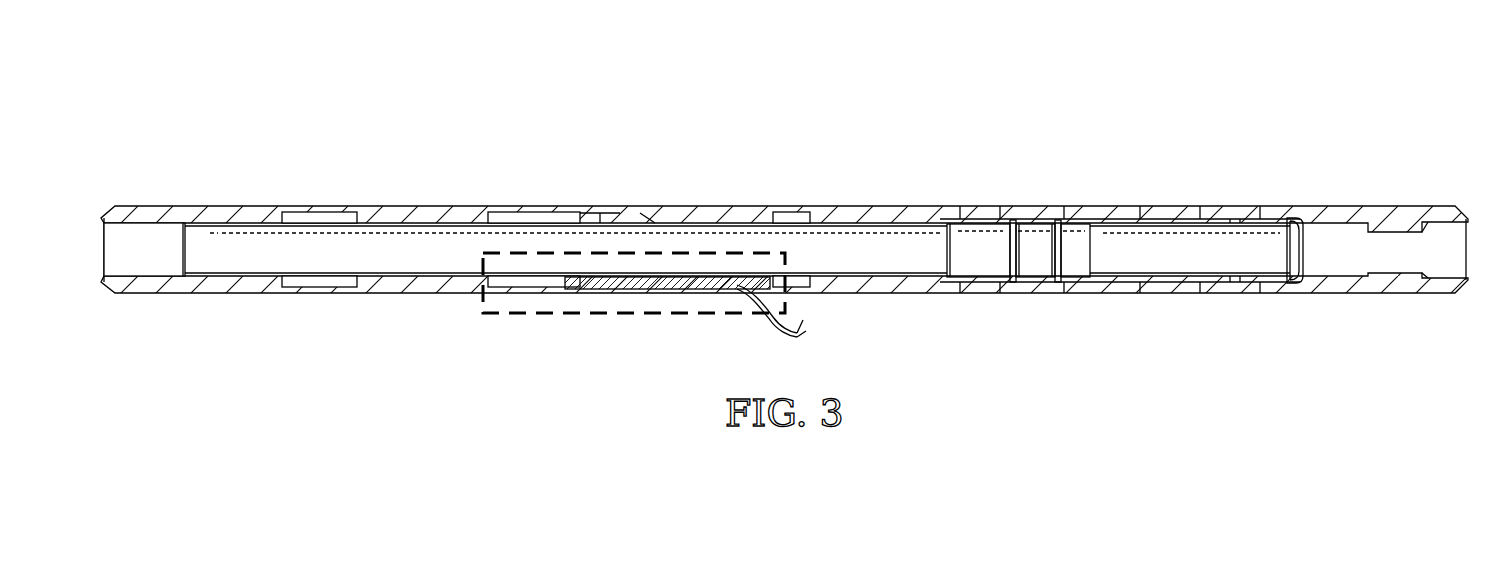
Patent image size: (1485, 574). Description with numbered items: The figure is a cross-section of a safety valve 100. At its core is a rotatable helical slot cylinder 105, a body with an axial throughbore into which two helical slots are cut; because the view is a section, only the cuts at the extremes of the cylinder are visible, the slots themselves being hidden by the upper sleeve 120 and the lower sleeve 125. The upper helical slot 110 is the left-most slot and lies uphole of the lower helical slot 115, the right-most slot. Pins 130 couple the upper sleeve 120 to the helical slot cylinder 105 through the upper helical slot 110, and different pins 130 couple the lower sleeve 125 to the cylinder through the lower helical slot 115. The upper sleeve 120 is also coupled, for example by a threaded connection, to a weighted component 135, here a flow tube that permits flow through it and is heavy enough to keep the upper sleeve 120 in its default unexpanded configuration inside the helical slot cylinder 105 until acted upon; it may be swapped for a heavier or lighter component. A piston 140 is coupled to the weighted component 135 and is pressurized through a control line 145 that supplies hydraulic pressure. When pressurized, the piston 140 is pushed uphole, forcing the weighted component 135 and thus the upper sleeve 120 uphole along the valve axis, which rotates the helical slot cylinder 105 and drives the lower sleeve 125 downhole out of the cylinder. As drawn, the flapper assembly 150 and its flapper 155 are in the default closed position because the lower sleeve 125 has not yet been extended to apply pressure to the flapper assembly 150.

The safety valve 100 is at (784, 221).
The helical slot cylinder 105 is at (784, 284).
The upper helical slot 110 is at (967, 207).
The lower helical slot 115 is at (1150, 207).
The upper sleeve 120 is at (992, 283).
The lower sleeve 125 is at (1090, 207).
The pins 130 is at (1005, 207).
The weighted component 135 is at (437, 283).
The piston 140 is at (627, 295).
The control line 145 is at (775, 322).
The flapper assembly 150 is at (1233, 283).
The flapper 155 is at (1310, 207).